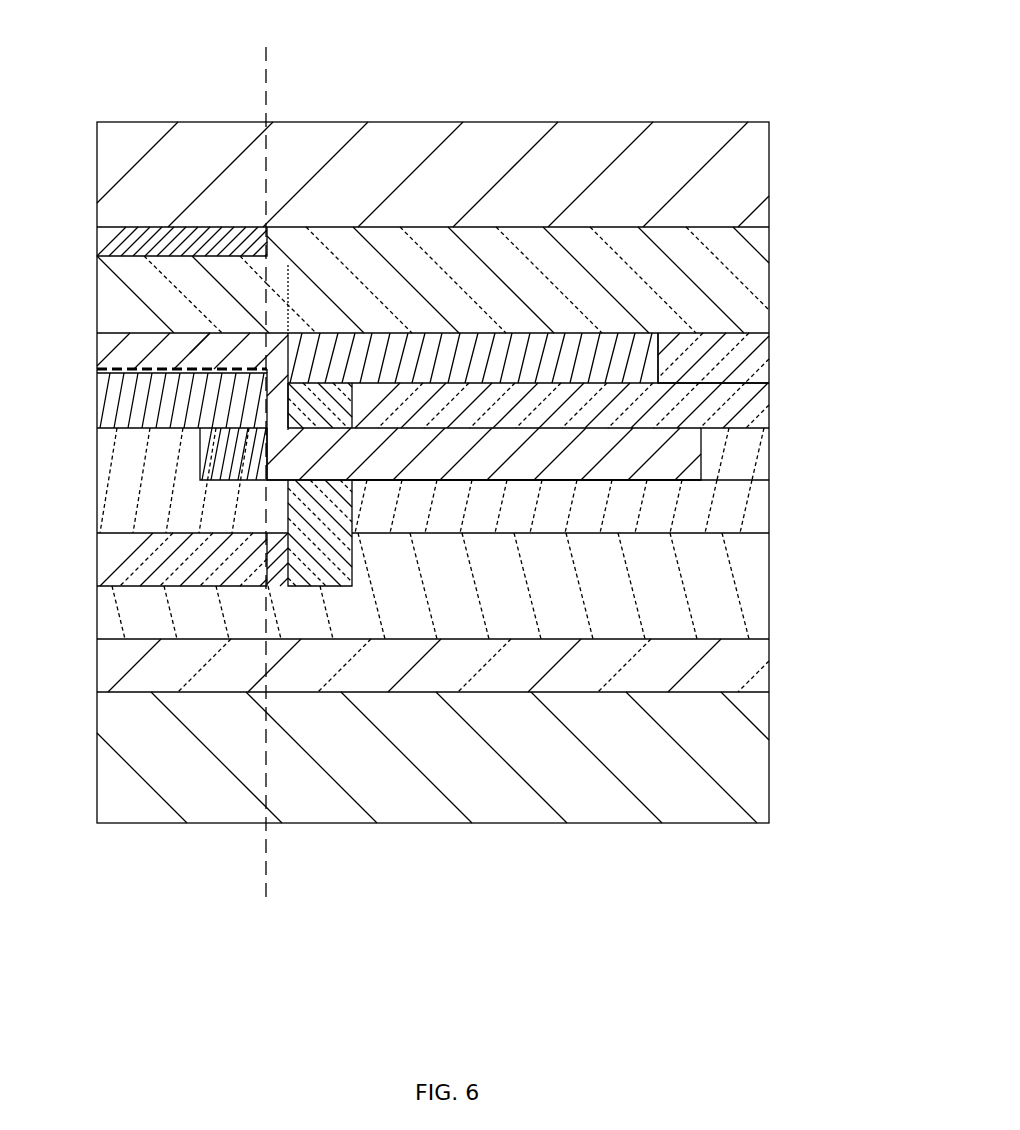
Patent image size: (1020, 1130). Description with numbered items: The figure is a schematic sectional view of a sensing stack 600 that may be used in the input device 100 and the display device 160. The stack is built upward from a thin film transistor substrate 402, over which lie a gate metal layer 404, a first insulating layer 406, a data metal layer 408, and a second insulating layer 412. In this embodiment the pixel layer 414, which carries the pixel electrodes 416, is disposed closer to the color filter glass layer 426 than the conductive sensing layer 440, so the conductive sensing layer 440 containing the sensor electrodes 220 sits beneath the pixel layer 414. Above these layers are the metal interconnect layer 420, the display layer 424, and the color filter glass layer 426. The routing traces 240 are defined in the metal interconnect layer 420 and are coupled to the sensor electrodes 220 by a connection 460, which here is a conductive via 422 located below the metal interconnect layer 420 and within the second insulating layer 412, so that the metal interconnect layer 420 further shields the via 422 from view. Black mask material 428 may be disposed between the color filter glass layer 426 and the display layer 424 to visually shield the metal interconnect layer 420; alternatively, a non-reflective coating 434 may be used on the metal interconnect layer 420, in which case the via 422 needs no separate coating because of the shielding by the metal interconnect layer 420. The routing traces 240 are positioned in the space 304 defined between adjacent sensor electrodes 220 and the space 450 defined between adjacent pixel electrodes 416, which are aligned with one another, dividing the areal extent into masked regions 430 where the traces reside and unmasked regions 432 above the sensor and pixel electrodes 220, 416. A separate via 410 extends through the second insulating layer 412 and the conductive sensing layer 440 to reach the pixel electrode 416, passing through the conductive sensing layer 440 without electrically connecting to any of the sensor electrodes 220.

The input device 100 is at (714, 49).
The display device 160 is at (805, 219).
The sensing stack 600 is at (786, 519).
The masked regions 430 is at (266, 34).
The unmasked regions 432 is at (266, 34).
The space 304 is at (266, 898).
The color filter glass layer 426 is at (491, 180).
The display layer 424 is at (491, 284).
The black mask material 428 is at (100, 236).
The space 450 is at (288, 281).
The non-reflective coating 434 is at (208, 332).
The pixel electrodes 416 is at (494, 366).
The pixel layer 414 is at (648, 355).
The second insulating layer 412 is at (498, 416).
The metal interconnect layer 420 is at (107, 387).
The routing traces 240 is at (108, 415).
The conductive sensing layer 440 is at (692, 443).
The sensor electrodes 220 is at (687, 460).
The conductive via 422 is at (212, 455).
The connection 460 is at (264, 470).
The via 410 is at (333, 510).
The data metal layer 408 is at (112, 555).
The first insulating layer 406 is at (494, 604).
The gate metal layer 404 is at (496, 677).
The thin film transistor substrate 402 is at (496, 774).